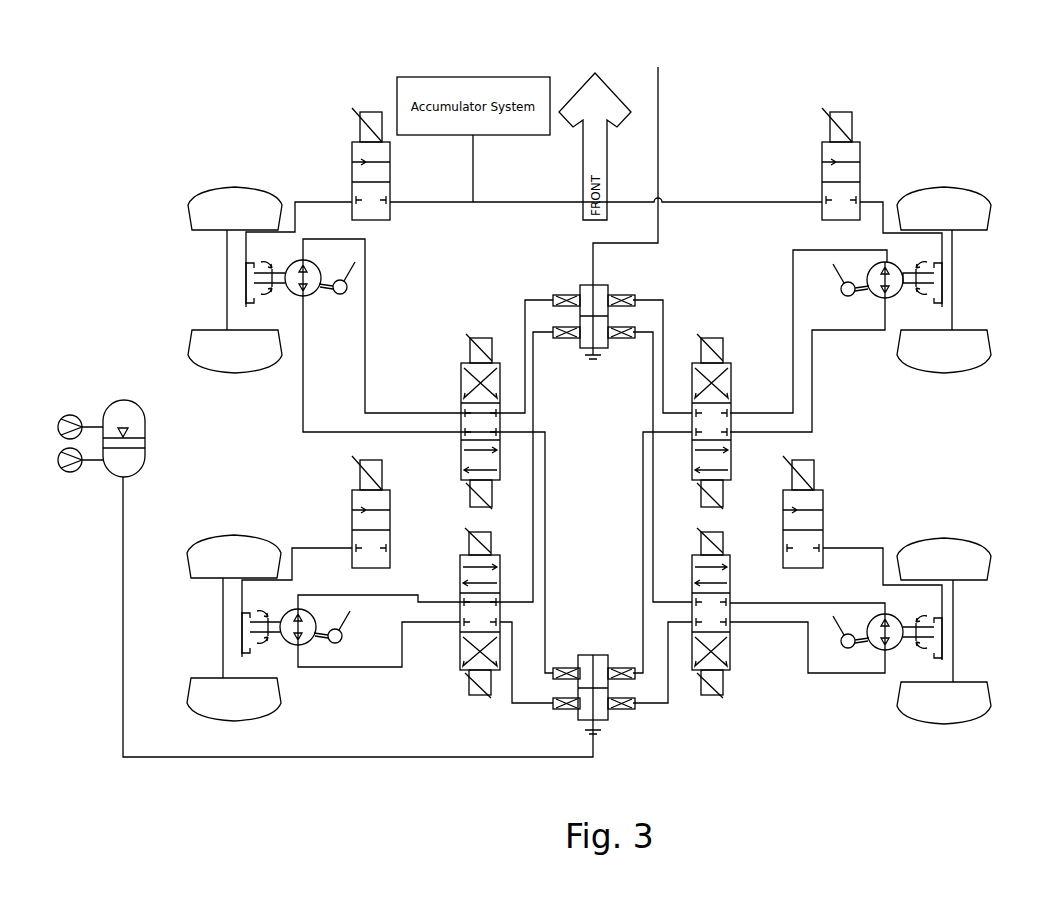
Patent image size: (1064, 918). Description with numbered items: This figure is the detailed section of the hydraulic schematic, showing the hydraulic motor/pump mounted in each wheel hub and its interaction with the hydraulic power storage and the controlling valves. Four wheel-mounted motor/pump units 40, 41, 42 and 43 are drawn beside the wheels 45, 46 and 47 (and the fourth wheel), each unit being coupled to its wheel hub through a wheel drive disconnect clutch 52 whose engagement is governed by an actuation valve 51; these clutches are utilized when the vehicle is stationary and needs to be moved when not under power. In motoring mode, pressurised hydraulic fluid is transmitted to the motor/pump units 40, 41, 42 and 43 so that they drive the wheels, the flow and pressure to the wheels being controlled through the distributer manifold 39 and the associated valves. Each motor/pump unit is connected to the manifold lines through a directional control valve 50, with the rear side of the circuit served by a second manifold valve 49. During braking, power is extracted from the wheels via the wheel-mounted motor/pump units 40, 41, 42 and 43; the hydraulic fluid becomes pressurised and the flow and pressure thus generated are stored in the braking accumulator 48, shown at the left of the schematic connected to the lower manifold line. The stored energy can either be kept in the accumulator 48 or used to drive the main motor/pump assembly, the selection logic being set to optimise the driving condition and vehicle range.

The distributer manifold 39 is at (593, 283).
The motor/pump unit 40 is at (880, 637).
The motor/pump unit 41 is at (315, 643).
The motor/pump unit 42 is at (323, 267).
The motor/pump unit 43 is at (860, 262).
The wheel 45 is at (950, 538).
The wheel 46 is at (225, 535).
The wheel 47 is at (222, 372).
The braking accumulator 48 is at (950, 372).
The rear proportional valve 49 is at (585, 655).
The directional control valve 50 is at (461, 393).
The actuation valve 51 is at (352, 160).
The wheel drive disconnect clutch 52 is at (253, 280).